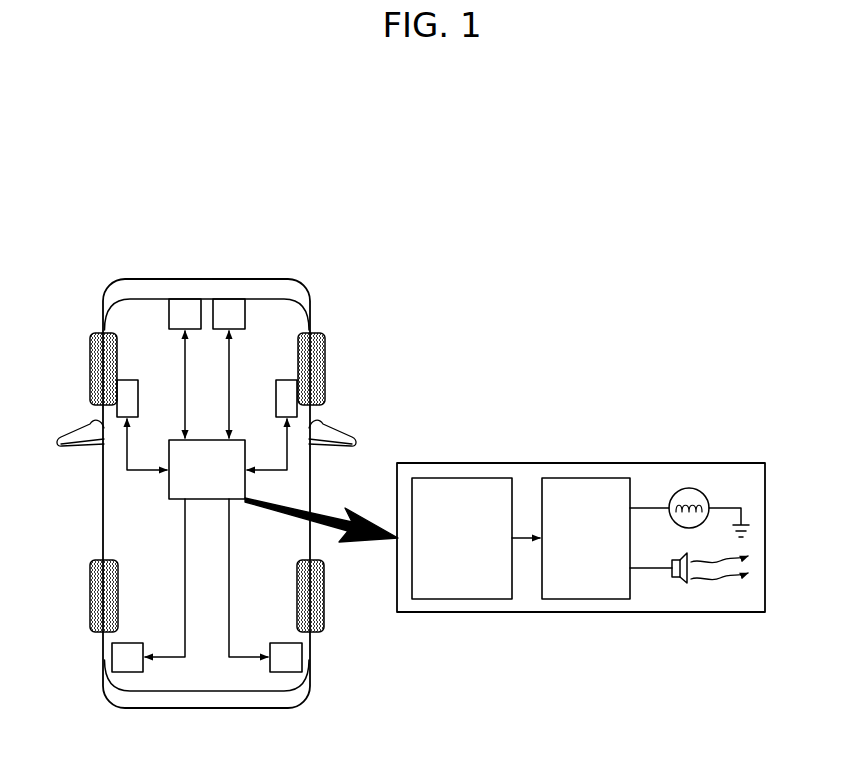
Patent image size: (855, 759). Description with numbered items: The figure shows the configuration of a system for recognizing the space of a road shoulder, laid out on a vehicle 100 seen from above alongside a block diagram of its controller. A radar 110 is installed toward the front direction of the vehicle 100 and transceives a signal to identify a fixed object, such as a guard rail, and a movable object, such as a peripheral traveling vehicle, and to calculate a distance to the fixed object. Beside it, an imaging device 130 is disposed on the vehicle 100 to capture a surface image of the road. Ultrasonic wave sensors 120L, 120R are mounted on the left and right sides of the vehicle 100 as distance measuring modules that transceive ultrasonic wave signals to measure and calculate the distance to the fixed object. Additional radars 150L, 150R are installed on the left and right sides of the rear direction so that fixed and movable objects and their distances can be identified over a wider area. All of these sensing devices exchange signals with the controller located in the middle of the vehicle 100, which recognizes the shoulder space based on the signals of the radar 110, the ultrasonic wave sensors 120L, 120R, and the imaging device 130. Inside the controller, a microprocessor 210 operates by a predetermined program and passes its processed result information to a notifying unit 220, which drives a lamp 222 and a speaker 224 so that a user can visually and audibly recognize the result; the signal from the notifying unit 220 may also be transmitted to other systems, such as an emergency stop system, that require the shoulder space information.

The vehicle 100 is at (103, 468).
The radar 110 is at (183, 305).
The imaging device 130 is at (230, 305).
The ultrasonic wave sensor 120L is at (126, 406).
The ultrasonic wave sensor 120R is at (291, 406).
The radar 150L is at (125, 656).
The radar 150R is at (288, 656).
The microprocessor 210 is at (469, 477).
The notifying unit 220 is at (589, 477).
The lamp 222 is at (688, 487).
The speaker 224 is at (680, 584).